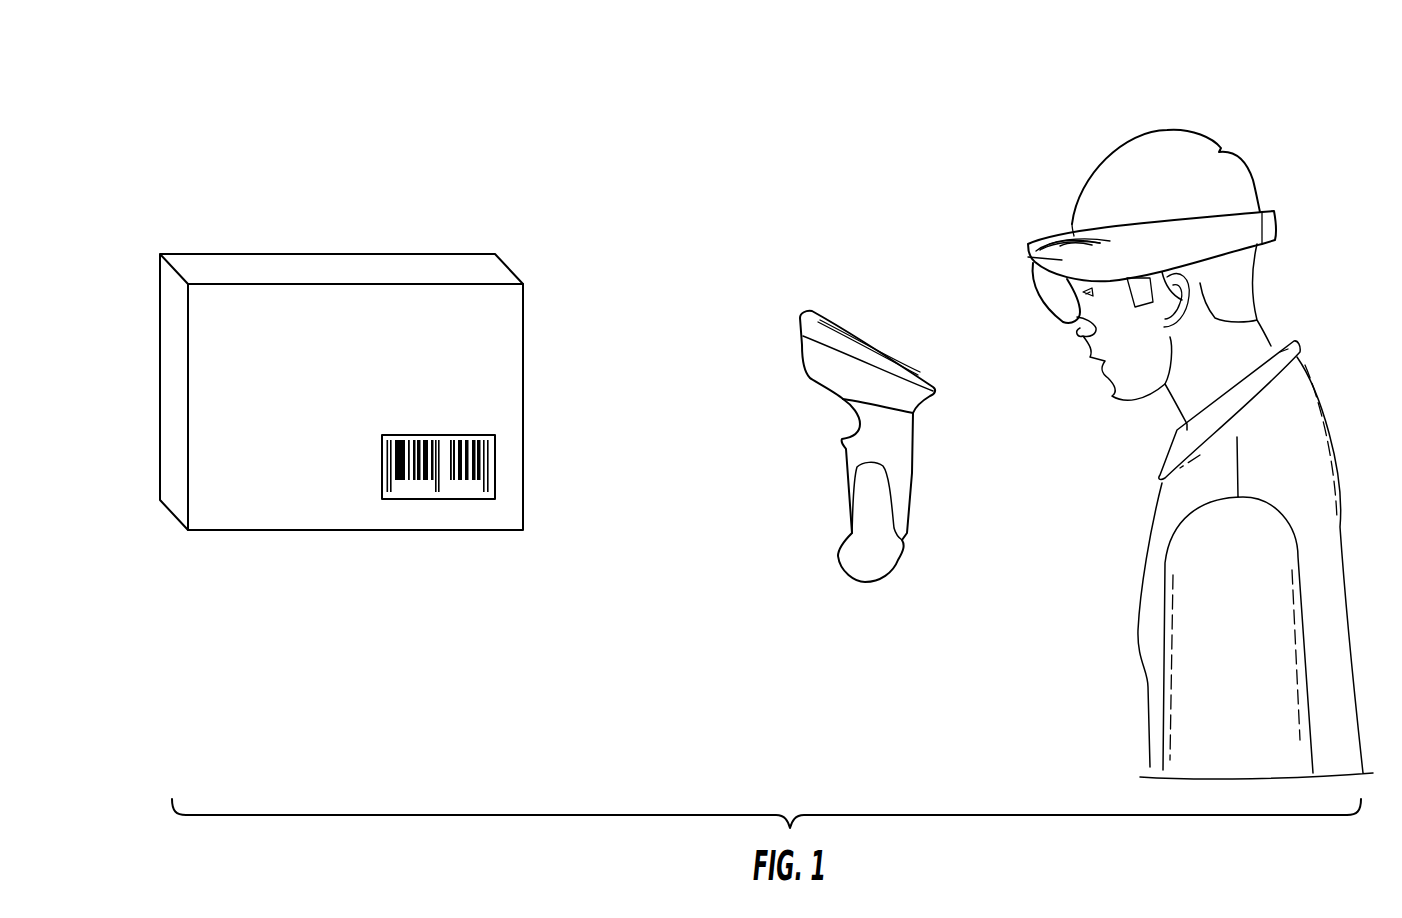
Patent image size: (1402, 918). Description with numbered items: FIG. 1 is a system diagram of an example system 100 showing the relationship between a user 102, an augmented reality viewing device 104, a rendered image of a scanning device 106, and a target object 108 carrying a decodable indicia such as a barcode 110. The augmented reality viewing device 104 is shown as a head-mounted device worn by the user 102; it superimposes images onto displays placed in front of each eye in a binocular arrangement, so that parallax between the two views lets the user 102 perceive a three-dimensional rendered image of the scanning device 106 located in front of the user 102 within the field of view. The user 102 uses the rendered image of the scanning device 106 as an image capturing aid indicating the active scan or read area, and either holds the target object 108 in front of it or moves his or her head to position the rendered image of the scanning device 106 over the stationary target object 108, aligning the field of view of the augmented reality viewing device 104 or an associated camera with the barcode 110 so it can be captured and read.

The system 100 is at (792, 72).
The user 102 is at (1123, 140).
The augmented reality viewing device 104 is at (1045, 237).
The rendered image of a scanning device 106 is at (808, 312).
The target object 108 is at (160, 252).
The barcode 110 is at (463, 433).